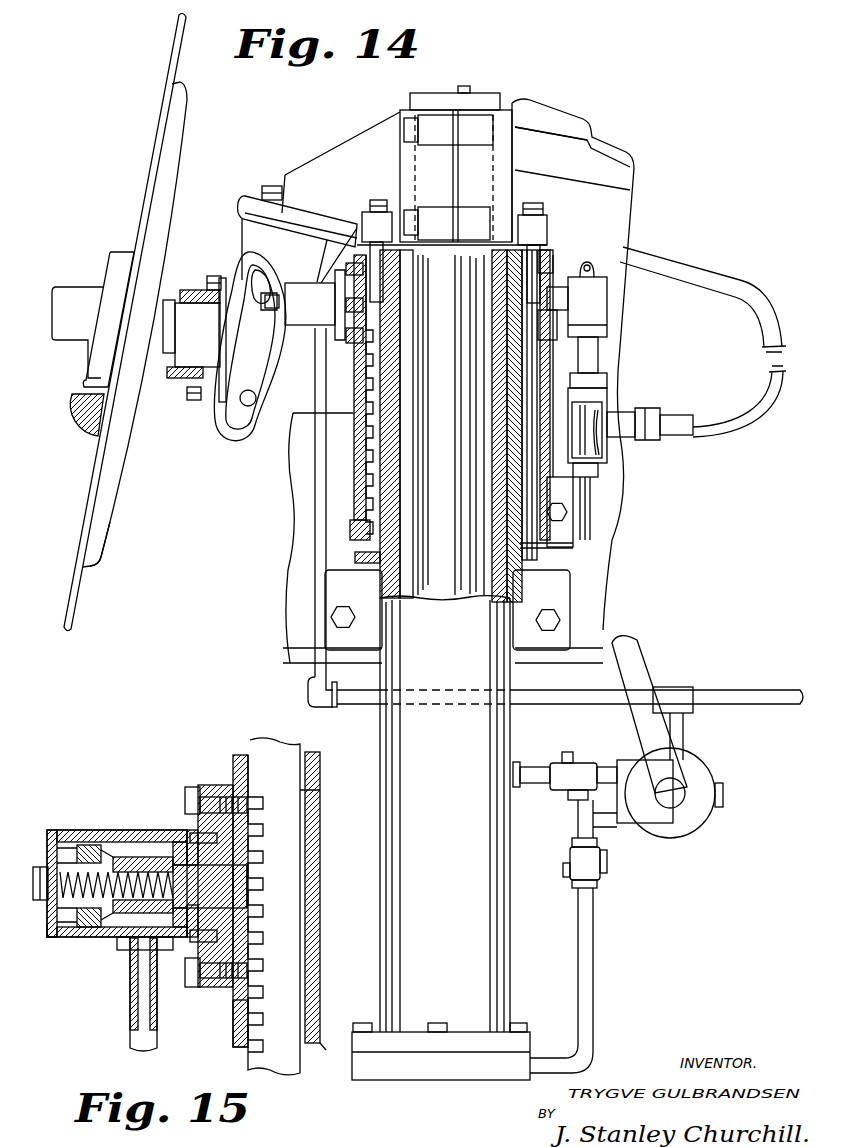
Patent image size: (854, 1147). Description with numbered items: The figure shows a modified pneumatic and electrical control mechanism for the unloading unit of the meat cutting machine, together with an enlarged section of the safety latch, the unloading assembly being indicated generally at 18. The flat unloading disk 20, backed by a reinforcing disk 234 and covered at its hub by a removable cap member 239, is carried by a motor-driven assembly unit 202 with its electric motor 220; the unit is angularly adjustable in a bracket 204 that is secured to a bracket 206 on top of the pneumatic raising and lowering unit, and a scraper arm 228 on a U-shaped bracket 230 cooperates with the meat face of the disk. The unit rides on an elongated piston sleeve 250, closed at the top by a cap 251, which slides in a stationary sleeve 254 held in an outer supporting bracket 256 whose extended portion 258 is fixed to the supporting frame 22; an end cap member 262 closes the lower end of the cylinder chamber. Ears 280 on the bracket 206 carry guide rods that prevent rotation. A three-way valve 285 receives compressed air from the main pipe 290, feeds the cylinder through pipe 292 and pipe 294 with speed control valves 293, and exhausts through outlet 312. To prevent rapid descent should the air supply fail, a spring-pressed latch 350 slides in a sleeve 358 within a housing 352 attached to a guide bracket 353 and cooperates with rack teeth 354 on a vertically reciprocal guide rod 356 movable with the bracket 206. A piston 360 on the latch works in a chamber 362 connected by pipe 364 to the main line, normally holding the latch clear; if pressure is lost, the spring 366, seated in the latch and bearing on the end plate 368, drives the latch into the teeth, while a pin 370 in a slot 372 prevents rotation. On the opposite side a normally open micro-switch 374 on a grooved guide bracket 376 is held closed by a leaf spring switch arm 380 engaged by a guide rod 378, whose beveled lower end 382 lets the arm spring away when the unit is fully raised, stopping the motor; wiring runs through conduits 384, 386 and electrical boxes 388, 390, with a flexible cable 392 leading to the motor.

In FIG. 14, the chute plate 18 is at (128, 152).
In FIG. 14, the unloading disk 20 is at (173, 60).
In FIG. 14, the supporting frame 22 is at (608, 583).
In FIG. 14, the motor-driven assembly unit 202 is at (638, 142).
In FIG. 14, the bracket 204 is at (242, 213).
In FIG. 14, the bracket 206 is at (383, 123).
In FIG. 14, the electric motor 220 is at (633, 172).
In FIG. 14, the scraper arm 228 is at (92, 433).
In FIG. 14, the U-shaped bracket 230 is at (165, 380).
In FIG. 14, the reinforcing disk 234 is at (106, 518).
In FIG. 14, the hood or cap member 239 is at (77, 293).
In FIG. 14, the sleeve 250 is at (458, 425).
In FIG. 14, the cap 251 is at (482, 93).
In FIG. 14, the stationary sleeve 254 is at (408, 400).
In FIG. 14, the outer supporting bracket 256 is at (507, 930).
In FIG. 14, the extended portion 258 is at (575, 613).
In FIG. 14, the end cap member 262 is at (353, 1075).
In FIG. 14, the ears 280 is at (365, 218).
In FIG. 14, the three-way valve 285 is at (707, 763).
In FIG. 14, the pipe 290 is at (747, 695).
In FIG. 14, the pipe 292 is at (610, 763).
In FIG. 14, the speed control valve 293 is at (570, 850).
In FIG. 14, the pipe 294 is at (597, 980).
In FIG. 14, the exhaust outlet 312 is at (723, 800).
In FIG. 14, the latch 350 is at (350, 305).
In FIG. 15, the latch 350 is at (243, 895).
In FIG. 14, the housing 352 is at (300, 233).
In FIG. 15, the housing 352 is at (118, 830).
In FIG. 14, the guide bracket 353 is at (360, 443).
In FIG. 15, the guide bracket 353 is at (233, 763).
In FIG. 14, the rack teeth 354 is at (362, 478).
In FIG. 15, the rack teeth 354 is at (253, 993).
In FIG. 14, the guide rod 356 is at (373, 498).
In FIG. 15, the guide rod 356 is at (293, 950).
In FIG. 15, the sleeve 358 is at (177, 860).
In FIG. 15, the piston 360 is at (88, 843).
In FIG. 15, the chamber 362 is at (113, 920).
In FIG. 14, the pipe 364 is at (315, 627).
In FIG. 15, the pipe 364 is at (137, 1035).
In FIG. 15, the spring 366 is at (72, 832).
In FIG. 15, the end plate 368 is at (47, 933).
In FIG. 15, the pin 370 is at (230, 863).
In FIG. 15, the slot 372 is at (213, 865).
In FIG. 14, the micro-switch 374 is at (568, 298).
In FIG. 14, the guide bracket 376 is at (553, 260).
In FIG. 14, the guide rod 378 is at (540, 378).
In FIG. 14, the leaf spring switch arm 380 is at (537, 270).
In FIG. 14, the beveled end 382 is at (597, 547).
In FIG. 14, the conduit 384 is at (592, 497).
In FIG. 14, the conduit 386 is at (590, 363).
In FIG. 14, the electrical box 388 is at (610, 452).
In FIG. 14, the electrical box 390 is at (600, 323).
In FIG. 14, the flexible cable 392 is at (755, 296).